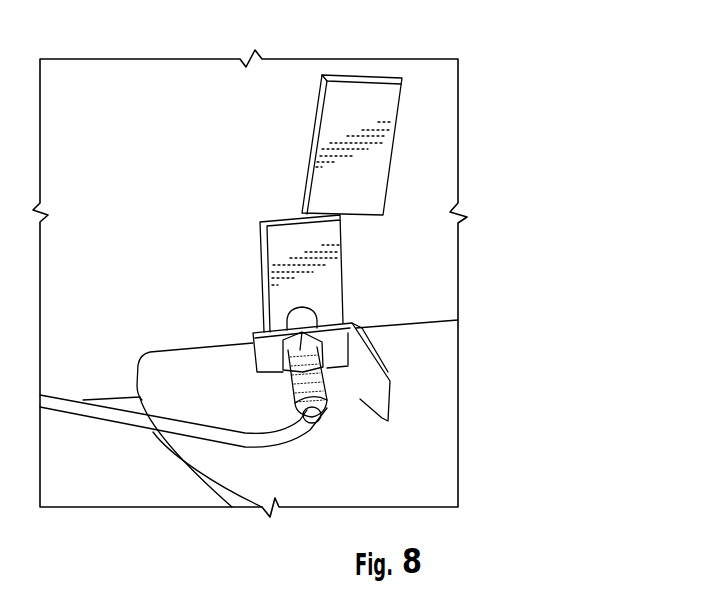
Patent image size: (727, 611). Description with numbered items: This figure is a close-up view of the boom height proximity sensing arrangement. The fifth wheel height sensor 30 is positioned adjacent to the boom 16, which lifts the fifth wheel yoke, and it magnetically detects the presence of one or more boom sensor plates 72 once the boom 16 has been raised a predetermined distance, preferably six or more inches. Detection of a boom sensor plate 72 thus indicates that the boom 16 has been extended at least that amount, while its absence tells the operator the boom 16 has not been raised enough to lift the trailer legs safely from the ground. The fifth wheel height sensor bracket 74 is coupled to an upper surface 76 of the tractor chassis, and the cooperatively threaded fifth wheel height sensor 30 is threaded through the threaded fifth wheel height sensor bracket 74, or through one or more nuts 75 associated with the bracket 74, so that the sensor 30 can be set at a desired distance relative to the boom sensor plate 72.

The boom 16 is at (413, 183).
The fifth wheel height sensor 30 is at (370, 337).
The boom sensor plate 72 is at (378, 94).
The fifth wheel height sensor bracket 74 is at (377, 387).
The nut 75 is at (285, 365).
The upper surface 76 is at (343, 478).